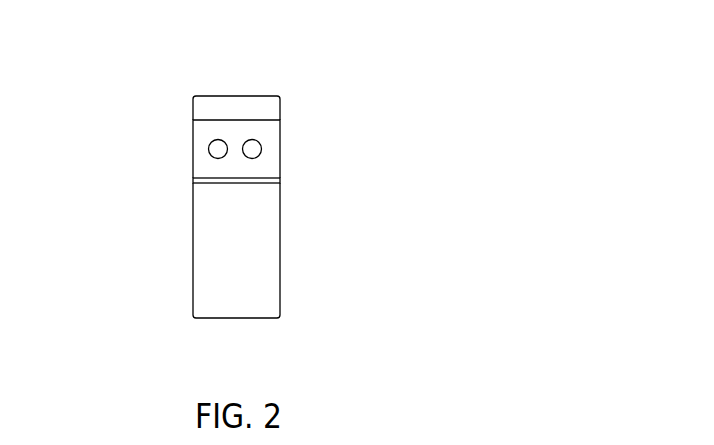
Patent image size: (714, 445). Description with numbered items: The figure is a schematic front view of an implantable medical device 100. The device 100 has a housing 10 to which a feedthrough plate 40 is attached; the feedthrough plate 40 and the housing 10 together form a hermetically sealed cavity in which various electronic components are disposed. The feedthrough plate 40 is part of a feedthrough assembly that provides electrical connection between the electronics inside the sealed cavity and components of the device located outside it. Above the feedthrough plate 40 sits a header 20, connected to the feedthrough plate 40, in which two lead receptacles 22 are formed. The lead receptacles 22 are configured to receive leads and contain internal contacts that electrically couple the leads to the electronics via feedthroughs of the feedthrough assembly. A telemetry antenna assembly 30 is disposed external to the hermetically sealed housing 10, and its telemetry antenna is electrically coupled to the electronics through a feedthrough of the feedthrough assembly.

The implantable device 100 is at (415, 73).
The housing 10 is at (272, 272).
The header 20 is at (273, 168).
The lead receptacles 22 is at (241, 142).
The telemetry antenna assembly 30 is at (273, 108).
The feedthrough plate 40 is at (203, 180).